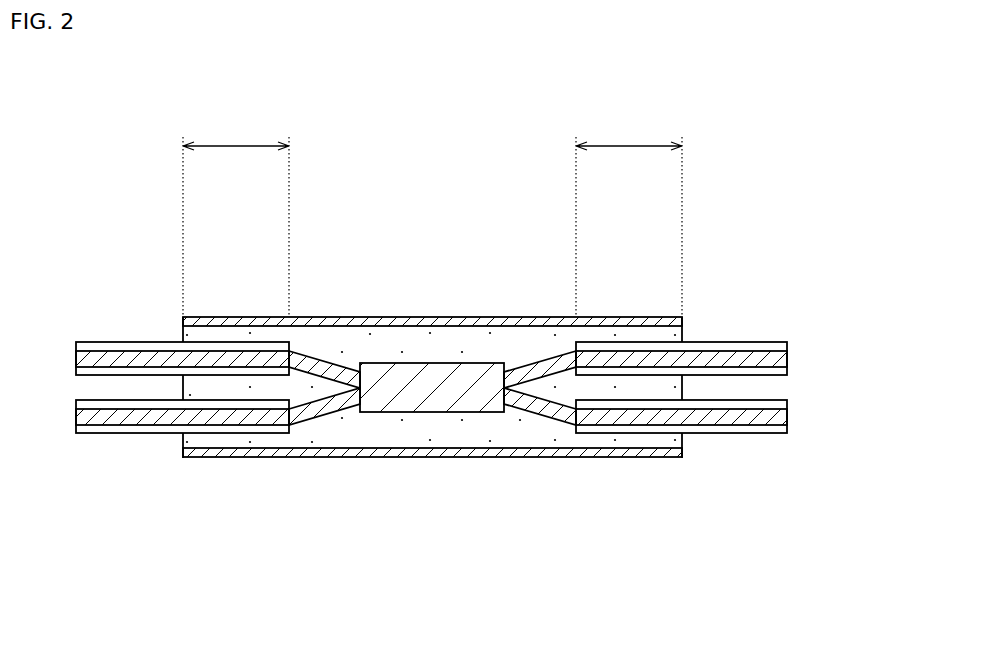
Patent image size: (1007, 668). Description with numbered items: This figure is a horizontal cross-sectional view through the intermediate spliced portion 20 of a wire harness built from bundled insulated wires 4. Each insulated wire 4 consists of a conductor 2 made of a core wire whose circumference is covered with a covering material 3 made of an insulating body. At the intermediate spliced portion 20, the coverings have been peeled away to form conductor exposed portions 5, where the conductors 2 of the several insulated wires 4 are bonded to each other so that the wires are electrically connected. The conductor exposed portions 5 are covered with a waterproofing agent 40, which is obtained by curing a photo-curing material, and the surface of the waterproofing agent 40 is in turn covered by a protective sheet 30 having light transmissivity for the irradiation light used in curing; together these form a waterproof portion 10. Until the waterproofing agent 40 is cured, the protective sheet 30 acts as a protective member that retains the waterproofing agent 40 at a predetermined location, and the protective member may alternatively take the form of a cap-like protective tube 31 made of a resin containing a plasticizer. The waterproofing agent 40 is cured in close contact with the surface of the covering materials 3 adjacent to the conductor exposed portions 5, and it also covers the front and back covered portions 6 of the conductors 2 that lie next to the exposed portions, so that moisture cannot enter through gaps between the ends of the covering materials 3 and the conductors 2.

The conductor 2 is at (76, 359).
The covering material 3 is at (88, 344).
The insulated wire 4 is at (432, 388).
The conductor exposed portion 5 is at (313, 356).
The covered portion 6 is at (234, 146).
The waterproof portion 10 is at (432, 417).
The intermediate spliced portion 20 is at (455, 438).
The protective sheet 30 is at (432, 388).
The protective tube 31 is at (236, 322).
The waterproofing agent 40 is at (458, 355).